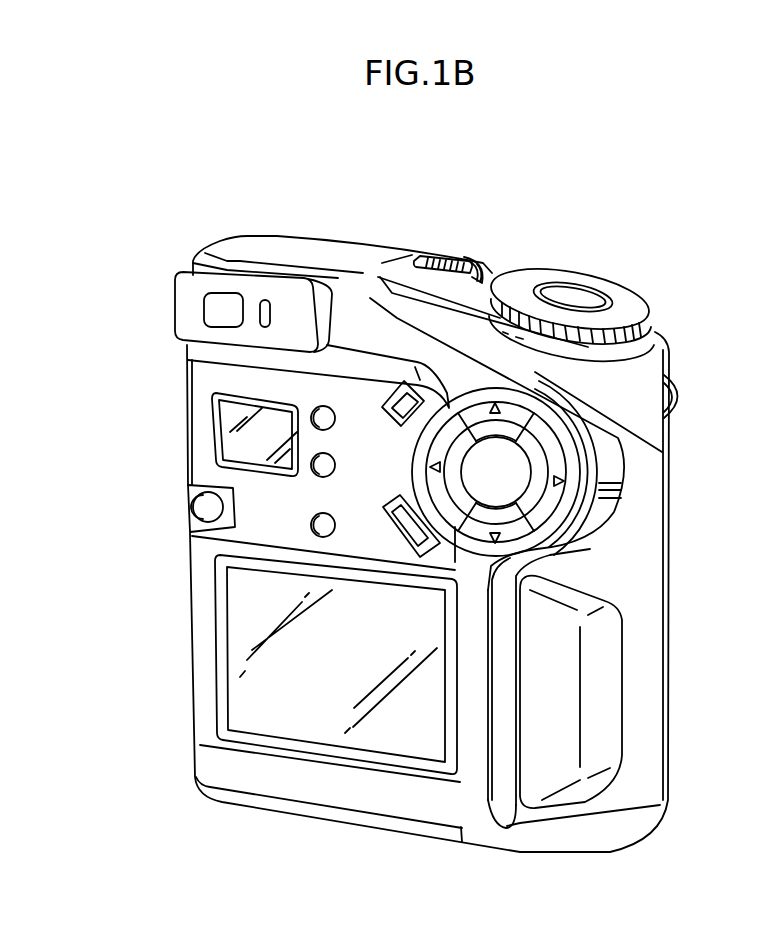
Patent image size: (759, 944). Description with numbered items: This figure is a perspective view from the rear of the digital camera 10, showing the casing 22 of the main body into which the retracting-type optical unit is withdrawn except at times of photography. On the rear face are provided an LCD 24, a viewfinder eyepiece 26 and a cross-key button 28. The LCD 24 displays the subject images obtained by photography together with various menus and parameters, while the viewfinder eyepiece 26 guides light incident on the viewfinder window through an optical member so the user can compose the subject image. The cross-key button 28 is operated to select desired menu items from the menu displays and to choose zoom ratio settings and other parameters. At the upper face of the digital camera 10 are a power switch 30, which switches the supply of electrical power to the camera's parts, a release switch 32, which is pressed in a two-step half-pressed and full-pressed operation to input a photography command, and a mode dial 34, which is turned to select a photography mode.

The digital camera 10 is at (449, 196).
The casing 22 is at (637, 592).
The LCD 24 is at (260, 608).
The viewfinder eyepiece 26 is at (227, 316).
The cross-key button 28 is at (507, 467).
The power switch 30 is at (470, 258).
The release switch 32 is at (580, 296).
The mode dial 34 is at (627, 308).